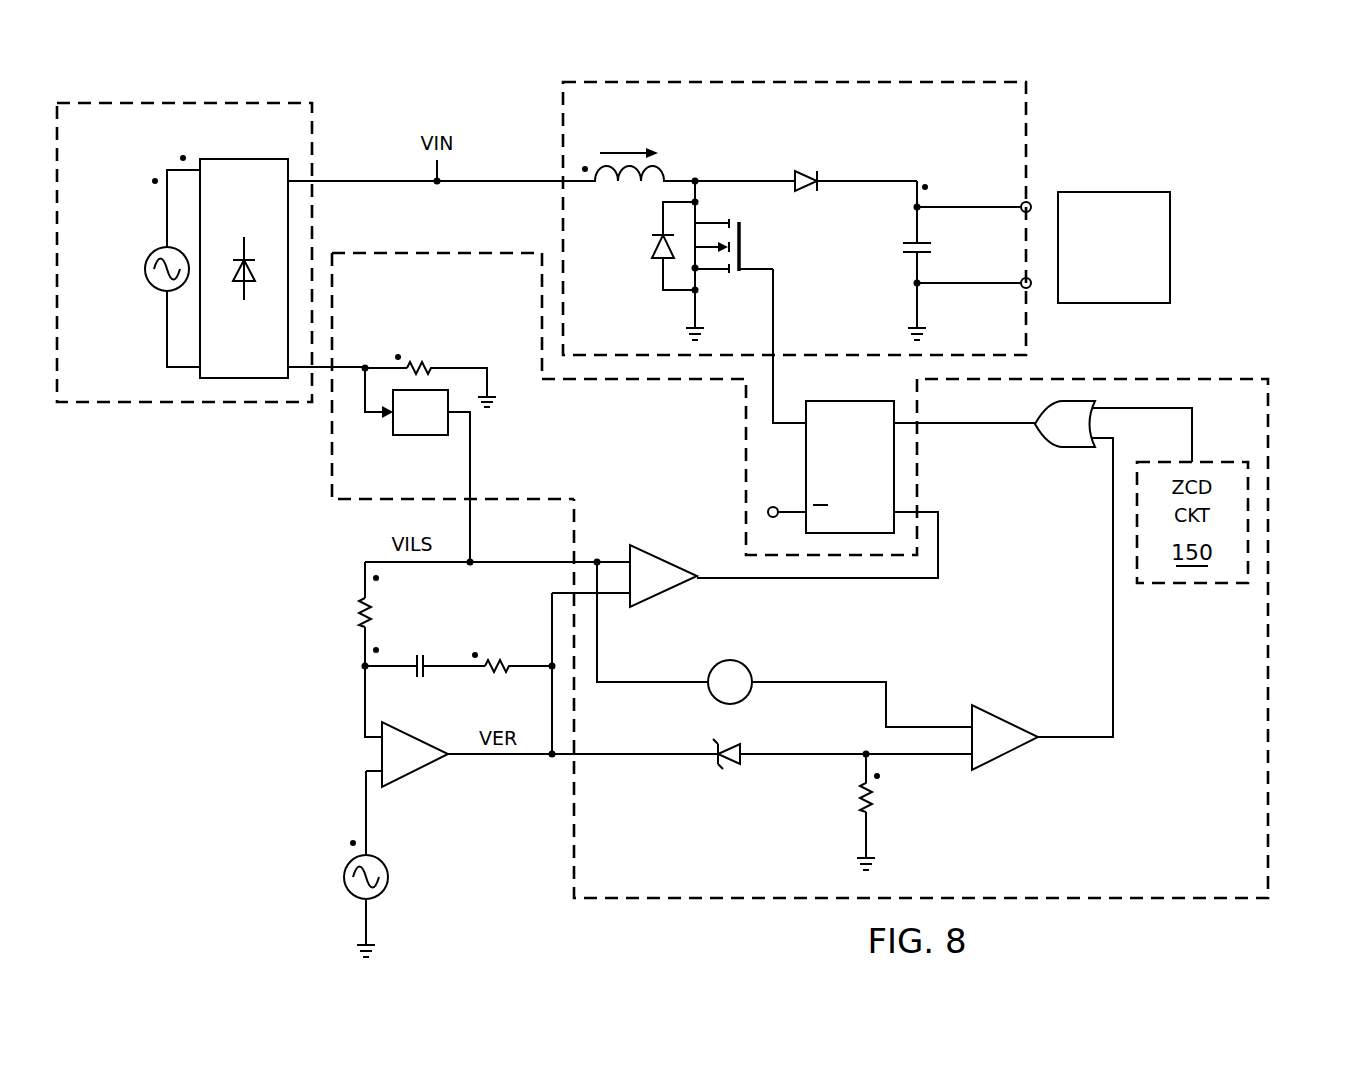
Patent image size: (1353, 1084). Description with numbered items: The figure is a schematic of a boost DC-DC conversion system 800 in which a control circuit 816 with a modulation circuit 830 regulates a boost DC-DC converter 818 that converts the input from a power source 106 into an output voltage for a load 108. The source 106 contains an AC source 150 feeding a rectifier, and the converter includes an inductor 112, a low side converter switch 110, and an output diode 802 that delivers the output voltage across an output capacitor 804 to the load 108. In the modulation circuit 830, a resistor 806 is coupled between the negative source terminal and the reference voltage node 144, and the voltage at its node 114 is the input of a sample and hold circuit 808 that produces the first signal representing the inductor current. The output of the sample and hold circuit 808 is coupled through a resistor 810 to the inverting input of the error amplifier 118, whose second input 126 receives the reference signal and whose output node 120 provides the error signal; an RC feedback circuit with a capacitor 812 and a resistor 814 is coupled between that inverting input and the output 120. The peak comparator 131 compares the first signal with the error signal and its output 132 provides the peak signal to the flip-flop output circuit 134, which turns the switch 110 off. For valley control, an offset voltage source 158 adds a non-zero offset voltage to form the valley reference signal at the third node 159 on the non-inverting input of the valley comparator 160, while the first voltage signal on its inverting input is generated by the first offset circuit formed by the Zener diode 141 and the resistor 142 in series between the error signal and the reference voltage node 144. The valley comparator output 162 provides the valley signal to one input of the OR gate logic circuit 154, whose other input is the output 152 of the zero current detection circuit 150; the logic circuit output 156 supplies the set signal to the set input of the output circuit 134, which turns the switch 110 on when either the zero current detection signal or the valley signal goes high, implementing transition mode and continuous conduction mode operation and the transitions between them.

The boost DC-DC conversion system 800 is at (1299, 116).
The power source 106 is at (140, 98).
The detection circuit 150 is at (145, 268).
The modulation circuit 830 is at (422, 245).
The control circuit 816 is at (1228, 353).
The DC-DC converter 818 is at (1033, 115).
The node 114 is at (352, 367).
The resistor 806 is at (420, 360).
The sample and hold circuit 808 is at (418, 437).
The resistor 810 is at (356, 616).
The capacitor 812 is at (420, 652).
The resistor 814 is at (500, 655).
The error amplifier 118 is at (416, 773).
The first node 120 is at (343, 876).
The second input 126 is at (361, 816).
The first comparator 131 is at (666, 556).
The first output 132 is at (940, 565).
The output circuit 134 is at (834, 483).
The inductor 112 is at (620, 184).
The converter switch 110 is at (768, 244).
The output diode 802 is at (816, 175).
The output capacitor 804 is at (903, 246).
The load 108 is at (1097, 277).
The logic circuit output 156 is at (965, 426).
The logic circuit 154 is at (1072, 450).
The detection circuit output 152 is at (1196, 416).
The second comparator output terminal 162 is at (1115, 656).
The offset voltage source 158 is at (710, 698).
The third node 159 is at (816, 686).
The Zener diode 141 is at (733, 738).
The resistor 142 is at (876, 802).
The reference voltage node 144 is at (870, 833).
The second comparator 160 is at (1010, 716).